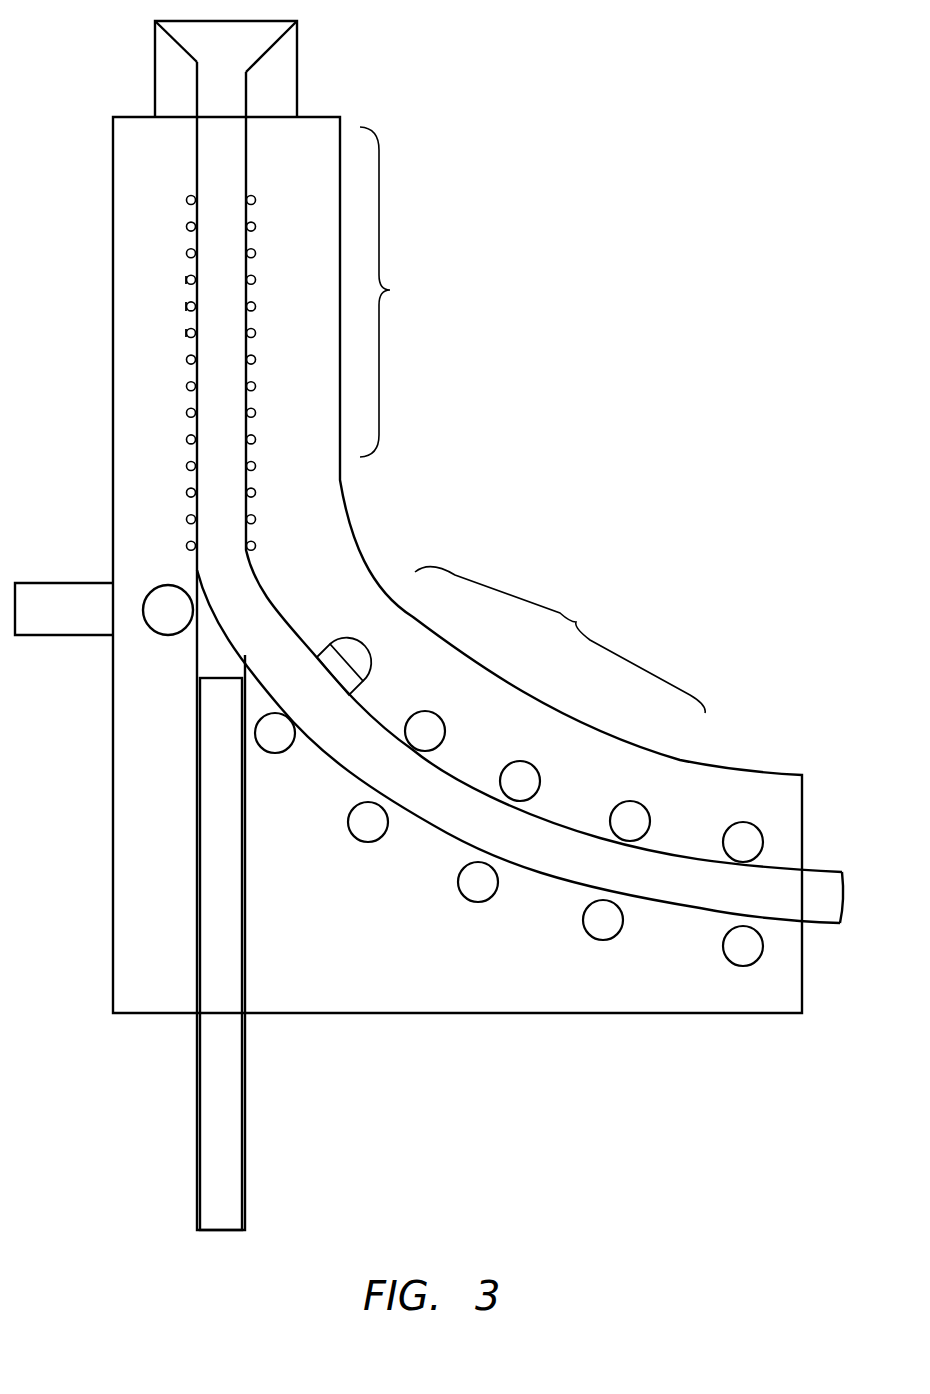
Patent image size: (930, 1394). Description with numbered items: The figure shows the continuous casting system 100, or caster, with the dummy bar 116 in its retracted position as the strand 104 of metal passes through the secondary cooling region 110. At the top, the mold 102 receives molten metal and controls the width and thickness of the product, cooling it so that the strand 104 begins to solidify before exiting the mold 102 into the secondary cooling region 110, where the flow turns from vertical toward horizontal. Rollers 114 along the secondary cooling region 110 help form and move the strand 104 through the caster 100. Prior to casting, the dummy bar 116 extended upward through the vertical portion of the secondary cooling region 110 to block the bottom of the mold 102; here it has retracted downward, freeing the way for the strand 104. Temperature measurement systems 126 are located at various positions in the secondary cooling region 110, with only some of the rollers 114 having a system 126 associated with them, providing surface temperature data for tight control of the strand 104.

The continuous casting system 100 is at (582, 218).
The mold 102 is at (290, 87).
The strand 104 is at (208, 373).
The secondary cooling region 110 is at (532, 420).
The rollers 114 is at (188, 226).
The dummy bar 116 is at (207, 856).
The temperature measurement systems 126 is at (188, 278).